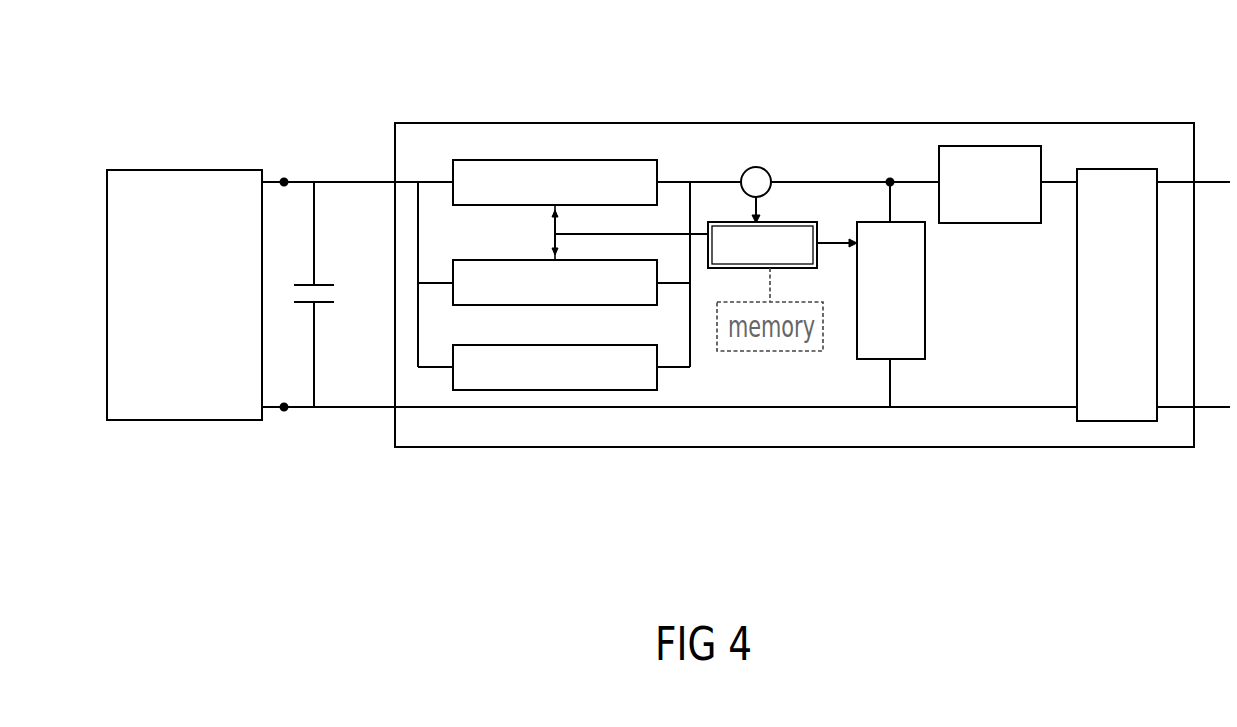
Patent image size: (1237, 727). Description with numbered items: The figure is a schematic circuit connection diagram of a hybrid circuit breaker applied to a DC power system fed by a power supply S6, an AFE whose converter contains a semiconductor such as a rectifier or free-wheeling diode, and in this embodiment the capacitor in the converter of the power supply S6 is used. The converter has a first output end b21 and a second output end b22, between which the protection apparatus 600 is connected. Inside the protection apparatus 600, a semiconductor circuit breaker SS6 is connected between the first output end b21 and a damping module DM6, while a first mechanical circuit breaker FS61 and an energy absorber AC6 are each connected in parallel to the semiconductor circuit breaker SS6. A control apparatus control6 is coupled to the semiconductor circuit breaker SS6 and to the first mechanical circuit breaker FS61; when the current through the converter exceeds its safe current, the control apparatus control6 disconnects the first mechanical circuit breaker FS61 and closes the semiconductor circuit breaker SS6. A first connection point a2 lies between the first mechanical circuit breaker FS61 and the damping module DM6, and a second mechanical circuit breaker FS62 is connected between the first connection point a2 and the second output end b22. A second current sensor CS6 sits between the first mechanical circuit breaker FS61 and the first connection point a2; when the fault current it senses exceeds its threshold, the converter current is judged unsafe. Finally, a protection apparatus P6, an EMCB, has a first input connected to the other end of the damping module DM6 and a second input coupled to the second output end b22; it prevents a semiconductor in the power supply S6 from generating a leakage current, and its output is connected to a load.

The power supply S6 is at (201, 309).
The first output end b21 is at (284, 182).
The second output end b22 is at (285, 409).
The protection apparatus 600 is at (978, 123).
The first mechanical circuit breaker FS61 is at (592, 201).
The semiconductor circuit breaker SS6 is at (580, 302).
The energy absorber AC6 is at (581, 386).
The second current sensor CS6 is at (757, 168).
The control apparatus control6 is at (782, 245).
The first connection point a2 is at (891, 181).
The second mechanical circuit breaker FS62 is at (921, 308).
The damping module DM6 is at (1016, 205).
The protection apparatus P6 is at (1130, 306).